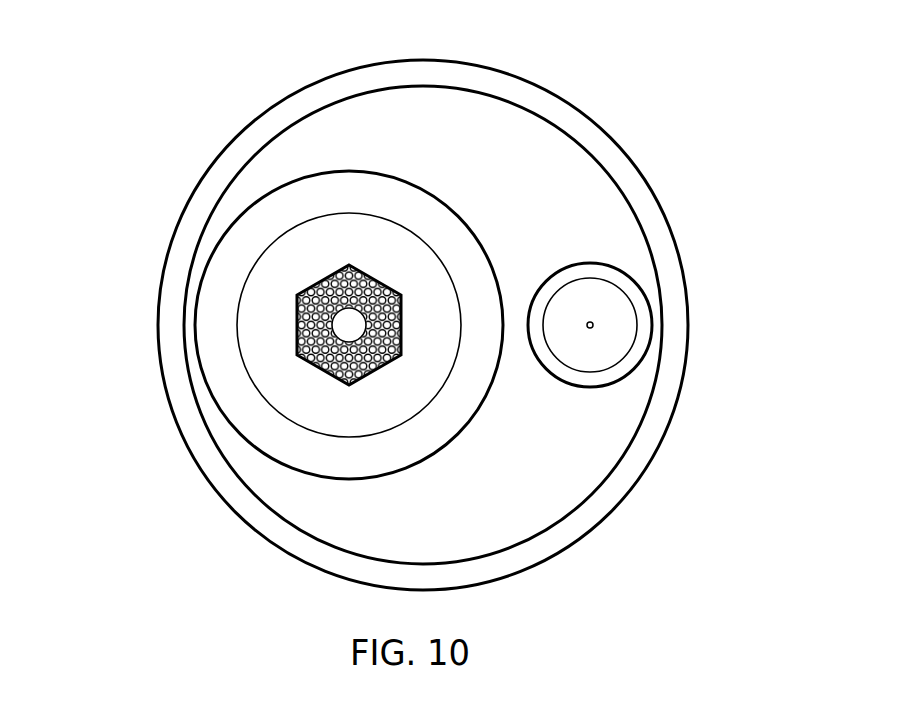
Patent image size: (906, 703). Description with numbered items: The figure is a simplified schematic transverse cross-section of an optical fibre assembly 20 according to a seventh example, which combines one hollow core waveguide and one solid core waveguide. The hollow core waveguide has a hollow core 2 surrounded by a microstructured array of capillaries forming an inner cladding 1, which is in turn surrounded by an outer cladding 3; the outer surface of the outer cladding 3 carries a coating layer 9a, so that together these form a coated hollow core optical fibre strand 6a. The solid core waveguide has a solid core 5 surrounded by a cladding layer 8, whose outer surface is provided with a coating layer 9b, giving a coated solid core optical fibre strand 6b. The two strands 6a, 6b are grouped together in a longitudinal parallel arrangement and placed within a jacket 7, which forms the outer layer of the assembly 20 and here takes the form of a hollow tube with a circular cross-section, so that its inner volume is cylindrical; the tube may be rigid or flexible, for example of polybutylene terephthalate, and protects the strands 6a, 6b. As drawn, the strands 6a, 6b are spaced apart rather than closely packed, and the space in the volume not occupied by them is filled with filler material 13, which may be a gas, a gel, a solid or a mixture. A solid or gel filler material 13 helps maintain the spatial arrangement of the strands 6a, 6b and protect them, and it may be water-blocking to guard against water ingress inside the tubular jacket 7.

The optical fibre assembly 20 is at (128, 67).
The inner cladding 1 is at (350, 322).
The hollow core 2 is at (299, 299).
The outer cladding 3 is at (262, 340).
The solid core 5 is at (594, 323).
The coated hollow core optical fibre strand 6a is at (275, 188).
The coated solid core optical fibre strand 6b is at (592, 262).
The jacket 7 is at (203, 476).
The cladding layer 8 is at (617, 341).
The coating layer 9a is at (290, 264).
The coating layer 9b is at (655, 298).
The filler material 13 is at (323, 515).